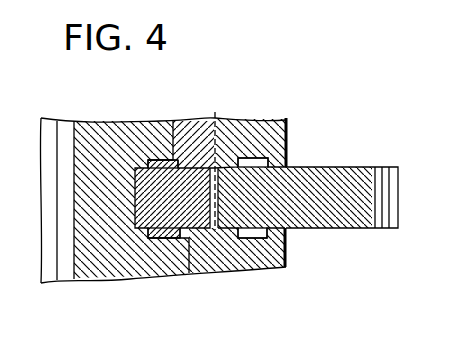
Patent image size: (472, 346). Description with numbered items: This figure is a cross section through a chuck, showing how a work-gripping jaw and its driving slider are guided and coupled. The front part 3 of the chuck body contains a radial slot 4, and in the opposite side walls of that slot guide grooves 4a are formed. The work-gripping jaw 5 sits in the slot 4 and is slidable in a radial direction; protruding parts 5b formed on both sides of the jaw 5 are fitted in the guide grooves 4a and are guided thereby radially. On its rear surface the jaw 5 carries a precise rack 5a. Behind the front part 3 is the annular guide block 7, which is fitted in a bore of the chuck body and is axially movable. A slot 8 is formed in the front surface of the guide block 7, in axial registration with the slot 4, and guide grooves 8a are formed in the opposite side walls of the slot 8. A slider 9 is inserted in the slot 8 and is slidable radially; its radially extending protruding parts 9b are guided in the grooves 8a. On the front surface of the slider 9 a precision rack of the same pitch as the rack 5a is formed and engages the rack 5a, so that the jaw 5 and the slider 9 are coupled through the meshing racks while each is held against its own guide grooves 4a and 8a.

The front part 3 is at (286, 121).
The radial slot 4 is at (226, 240).
The guide groove 4a is at (278, 136).
The work-gripping jaw 5 is at (277, 183).
The precise rack 5a is at (215, 231).
The protruding part 5b is at (257, 163).
The annular guide block 7 is at (104, 153).
The slot 8 is at (181, 238).
The guide groove 8a is at (170, 160).
The slider 9 is at (143, 190).
The protruding part 9b is at (157, 160).